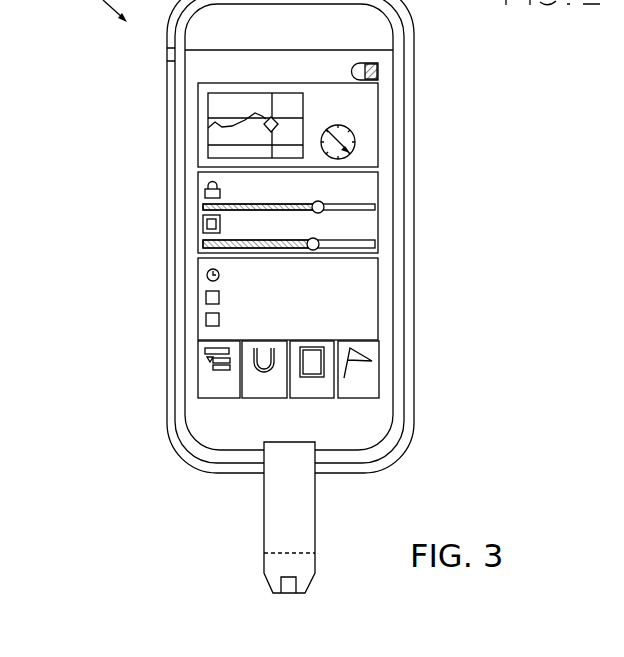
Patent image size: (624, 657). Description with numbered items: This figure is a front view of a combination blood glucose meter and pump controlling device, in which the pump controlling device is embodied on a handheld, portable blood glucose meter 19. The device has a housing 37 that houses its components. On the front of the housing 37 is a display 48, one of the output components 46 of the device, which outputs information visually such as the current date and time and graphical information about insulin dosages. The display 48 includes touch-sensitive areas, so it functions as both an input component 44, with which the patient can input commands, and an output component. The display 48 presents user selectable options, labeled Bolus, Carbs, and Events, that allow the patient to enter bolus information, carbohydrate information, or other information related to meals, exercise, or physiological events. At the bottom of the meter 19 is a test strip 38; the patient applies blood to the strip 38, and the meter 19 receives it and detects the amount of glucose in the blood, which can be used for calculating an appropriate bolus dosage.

The blood glucose meter 19 is at (243, 436).
The housing 37 is at (405, 369).
The test strip 38 is at (310, 510).
The input components 44 is at (192, 371).
The output components 46 is at (398, 114).
The display 48 is at (300, 228).